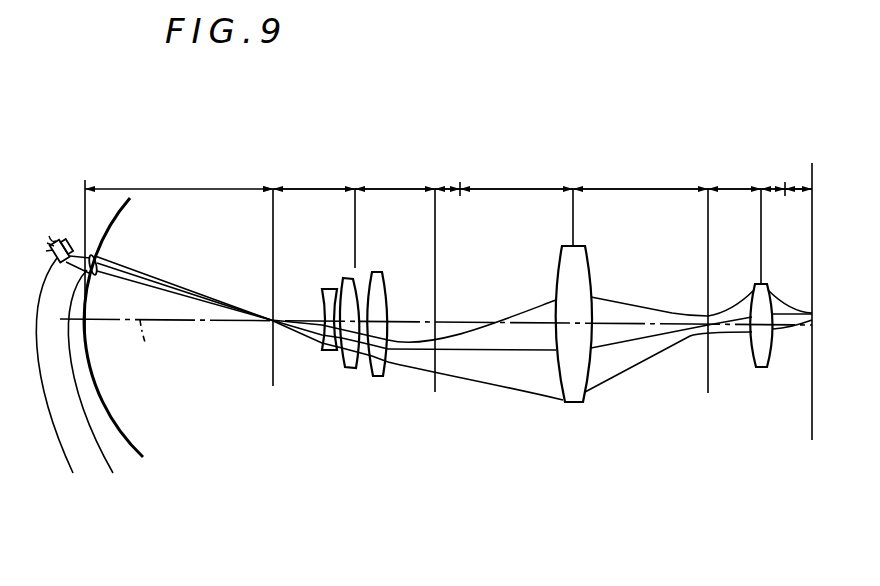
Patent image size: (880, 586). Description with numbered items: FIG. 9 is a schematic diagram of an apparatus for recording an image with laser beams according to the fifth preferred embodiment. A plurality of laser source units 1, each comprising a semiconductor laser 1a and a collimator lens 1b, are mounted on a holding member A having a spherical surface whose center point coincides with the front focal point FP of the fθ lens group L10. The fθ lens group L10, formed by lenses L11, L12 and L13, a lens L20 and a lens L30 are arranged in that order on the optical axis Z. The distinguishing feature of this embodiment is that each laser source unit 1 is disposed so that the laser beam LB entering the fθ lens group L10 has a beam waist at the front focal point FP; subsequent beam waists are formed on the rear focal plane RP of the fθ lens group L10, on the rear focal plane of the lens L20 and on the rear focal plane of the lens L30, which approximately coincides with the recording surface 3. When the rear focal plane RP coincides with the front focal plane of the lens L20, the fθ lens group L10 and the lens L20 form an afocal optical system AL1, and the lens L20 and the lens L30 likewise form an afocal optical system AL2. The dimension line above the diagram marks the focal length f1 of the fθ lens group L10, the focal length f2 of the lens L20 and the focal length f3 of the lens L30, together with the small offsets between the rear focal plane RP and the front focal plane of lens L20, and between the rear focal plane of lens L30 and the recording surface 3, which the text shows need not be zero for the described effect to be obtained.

The laser source unit 1 is at (140, 508).
The semiconductor laser 1a is at (61, 385).
The collimator lens 1b is at (104, 391).
The holding member A is at (137, 444).
The optical axis Z is at (136, 358).
The laser beam LB is at (181, 286).
The front focal point FP is at (268, 372).
The rear focal plane RP is at (435, 378).
The fθ lens group L10 is at (278, 441).
The lens L11 is at (330, 355).
The lens L12 is at (347, 372).
The lens L13 is at (382, 378).
The lens L20 is at (575, 403).
The lens L30 is at (761, 368).
The recording surface 3 is at (812, 397).
The afocal optical system AL1 is at (363, 497).
The afocal optical system AL2 is at (607, 492).
The focal length f1 is at (354, 170).
The focal length f2 is at (584, 170).
The focal length f3 is at (760, 170).